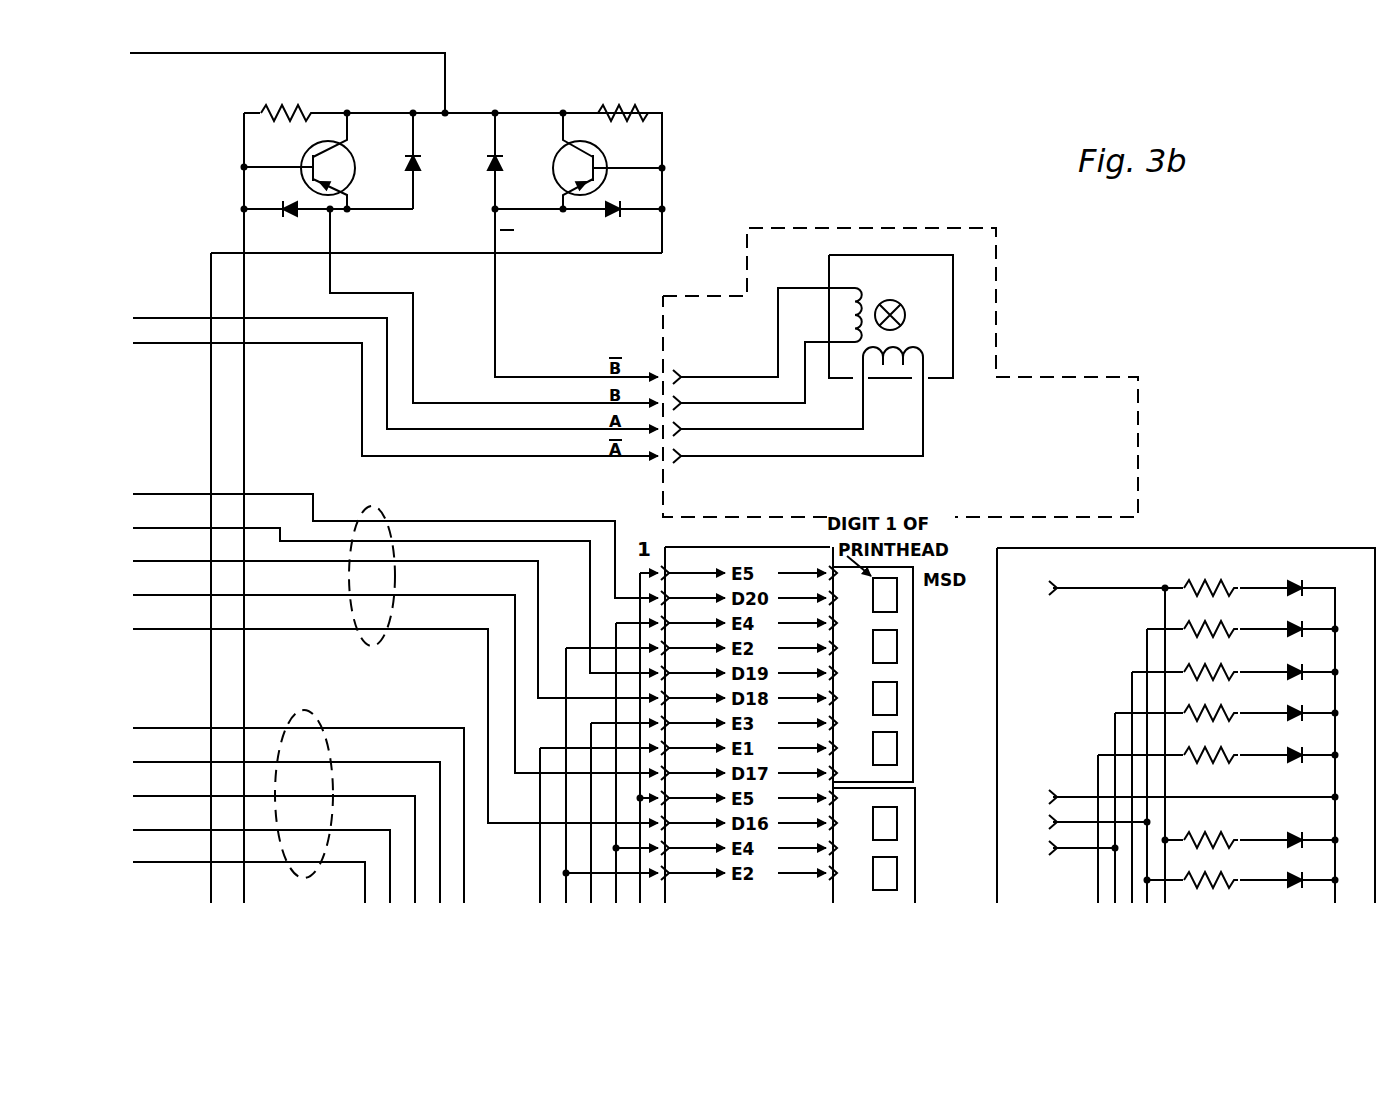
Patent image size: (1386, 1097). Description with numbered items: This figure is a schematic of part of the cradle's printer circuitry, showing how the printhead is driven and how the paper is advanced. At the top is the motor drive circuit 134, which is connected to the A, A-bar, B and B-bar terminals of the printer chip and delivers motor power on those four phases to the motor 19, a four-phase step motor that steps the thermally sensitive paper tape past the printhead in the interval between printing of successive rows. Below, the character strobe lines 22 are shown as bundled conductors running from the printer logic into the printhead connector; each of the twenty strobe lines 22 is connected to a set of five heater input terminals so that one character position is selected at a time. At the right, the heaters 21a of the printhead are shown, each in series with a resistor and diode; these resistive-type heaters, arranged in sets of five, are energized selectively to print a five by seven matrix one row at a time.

The motor drive circuit 134 is at (478, 288).
The motor 19 is at (935, 372).
The character strobe lines 22 is at (379, 511).
The heaters 21a is at (1237, 588).